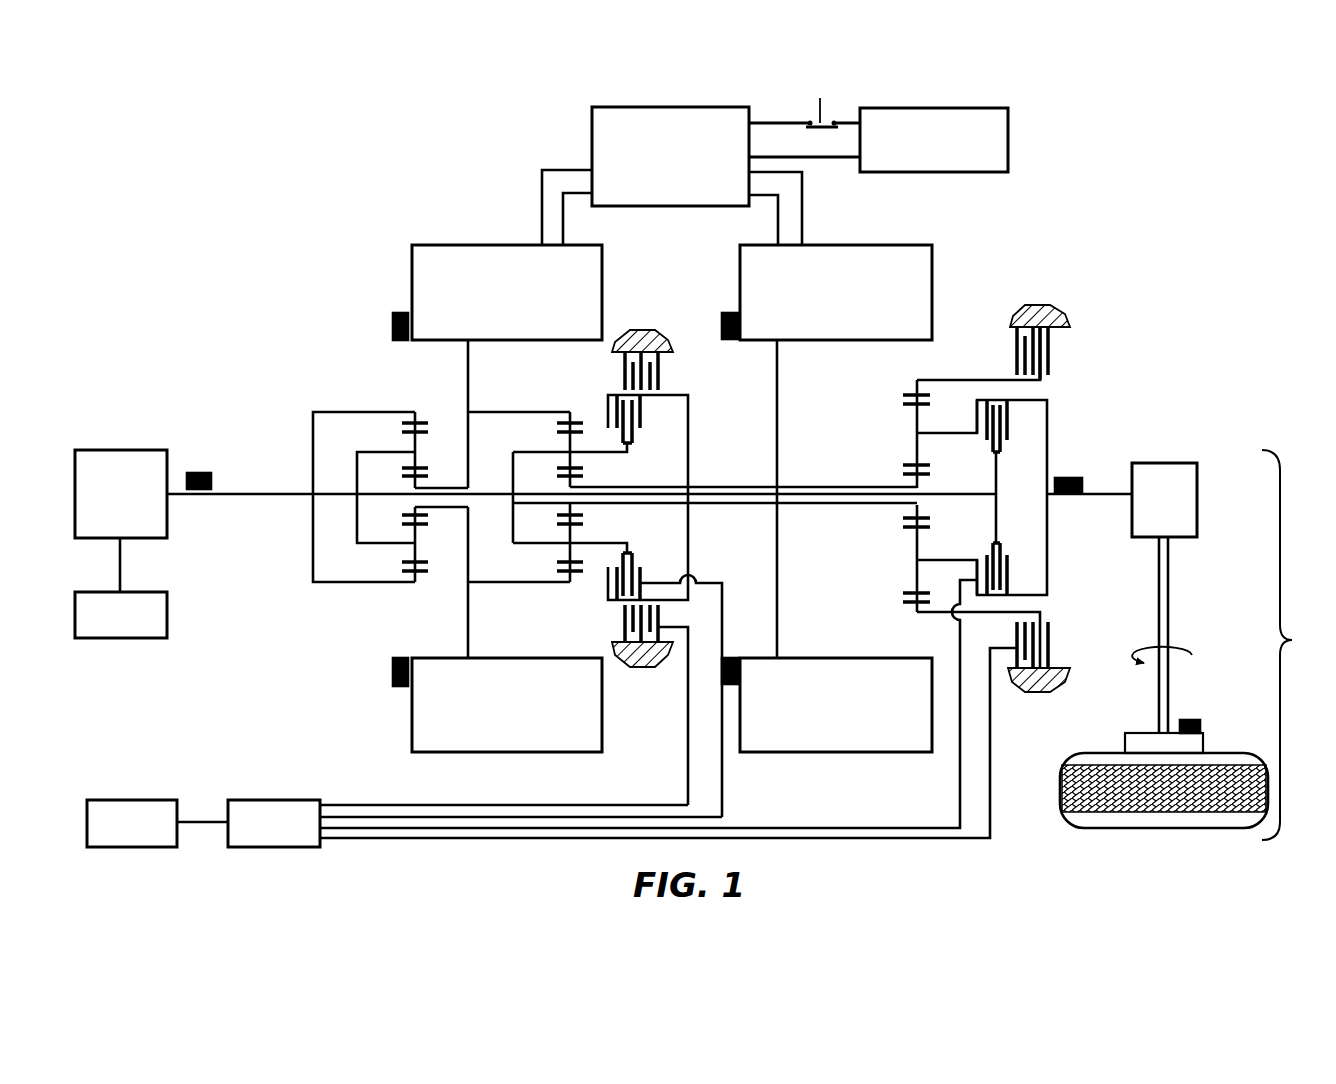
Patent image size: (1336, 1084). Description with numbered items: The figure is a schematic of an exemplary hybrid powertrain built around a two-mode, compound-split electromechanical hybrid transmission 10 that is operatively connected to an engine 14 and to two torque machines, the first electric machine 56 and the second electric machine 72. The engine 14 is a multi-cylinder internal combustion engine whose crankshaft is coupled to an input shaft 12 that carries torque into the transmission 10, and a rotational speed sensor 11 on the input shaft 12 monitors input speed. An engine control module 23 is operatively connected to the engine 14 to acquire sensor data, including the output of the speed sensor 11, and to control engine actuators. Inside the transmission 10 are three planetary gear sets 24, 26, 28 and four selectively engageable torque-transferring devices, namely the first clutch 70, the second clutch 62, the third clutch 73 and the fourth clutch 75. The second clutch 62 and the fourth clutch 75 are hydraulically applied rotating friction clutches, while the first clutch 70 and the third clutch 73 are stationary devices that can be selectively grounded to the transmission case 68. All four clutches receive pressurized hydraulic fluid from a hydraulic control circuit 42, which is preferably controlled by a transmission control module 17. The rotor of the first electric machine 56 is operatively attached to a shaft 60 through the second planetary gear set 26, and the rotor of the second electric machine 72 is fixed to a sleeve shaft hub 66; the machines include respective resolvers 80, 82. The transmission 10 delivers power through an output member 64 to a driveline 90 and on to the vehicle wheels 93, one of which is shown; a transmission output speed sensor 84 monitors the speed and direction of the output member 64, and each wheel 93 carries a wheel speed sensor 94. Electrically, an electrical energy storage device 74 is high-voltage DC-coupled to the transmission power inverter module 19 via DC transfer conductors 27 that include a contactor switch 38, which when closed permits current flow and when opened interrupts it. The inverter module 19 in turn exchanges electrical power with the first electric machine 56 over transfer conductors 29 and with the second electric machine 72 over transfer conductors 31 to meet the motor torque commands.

The electromechanical hybrid transmission 10 is at (372, 210).
The rotational speed sensor 11 is at (198, 473).
The input shaft 12 is at (275, 493).
The engine 14 is at (127, 450).
The transmission control module 17 is at (122, 800).
The transmission power inverter module 19 is at (592, 120).
The engine control module 23 is at (165, 638).
The first planetary gear set 24 is at (410, 402).
The second planetary gear set 26 is at (566, 402).
The DC transfer conductors 27 is at (766, 124).
The third planetary gear set 28 is at (907, 380).
The transfer conductors 29 is at (542, 207).
The transfer conductors 31 is at (802, 205).
The contactor switch 38 is at (826, 108).
The hydraulic control circuit 42 is at (243, 800).
The first electric machine 56 is at (412, 282).
The shaft 60 is at (968, 494).
The clutch C2 62 is at (1012, 438).
The output member 64 is at (1102, 494).
The sleeve shaft hub 66 is at (813, 486).
The transmission case 68 is at (645, 331).
The clutch C1 70 is at (1006, 344).
The second electric machine 72 is at (932, 262).
The clutch C3 73 is at (664, 372).
The electrical energy storage device 74 is at (1008, 126).
The clutch C4 75 is at (648, 427).
The resolver 80 is at (393, 326).
The resolver 82 is at (729, 313).
The transmission output speed sensor 84 is at (1070, 478).
The driveline 90 is at (1292, 640).
The vehicle wheel 93 is at (1125, 744).
The wheel speed sensor 94 is at (1190, 720).